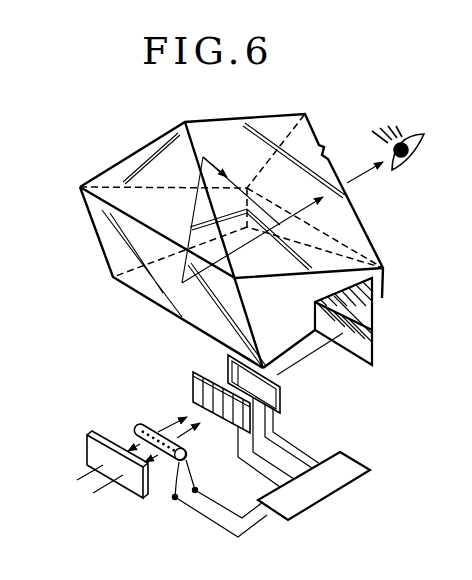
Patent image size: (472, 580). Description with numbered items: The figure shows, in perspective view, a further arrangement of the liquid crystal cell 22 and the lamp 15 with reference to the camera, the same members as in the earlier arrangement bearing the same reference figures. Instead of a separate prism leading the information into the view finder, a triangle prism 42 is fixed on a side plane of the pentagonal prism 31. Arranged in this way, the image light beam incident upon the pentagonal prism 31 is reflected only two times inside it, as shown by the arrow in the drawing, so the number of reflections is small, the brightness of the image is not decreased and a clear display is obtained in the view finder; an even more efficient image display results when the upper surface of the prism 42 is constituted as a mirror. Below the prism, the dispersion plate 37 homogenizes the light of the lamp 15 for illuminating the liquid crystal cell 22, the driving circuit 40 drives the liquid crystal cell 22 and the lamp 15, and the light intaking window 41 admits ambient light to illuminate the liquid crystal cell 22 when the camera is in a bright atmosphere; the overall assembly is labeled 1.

The prism 1 is at (105, 252).
The lamp 15 is at (145, 425).
The liquid crystal cell 22 is at (280, 402).
The pentagonal prism 31 is at (353, 225).
The dispersion plate 37 is at (215, 412).
The driving circuit 40 is at (352, 462).
The light intaking window 41 is at (85, 452).
The prism 42 is at (376, 338).